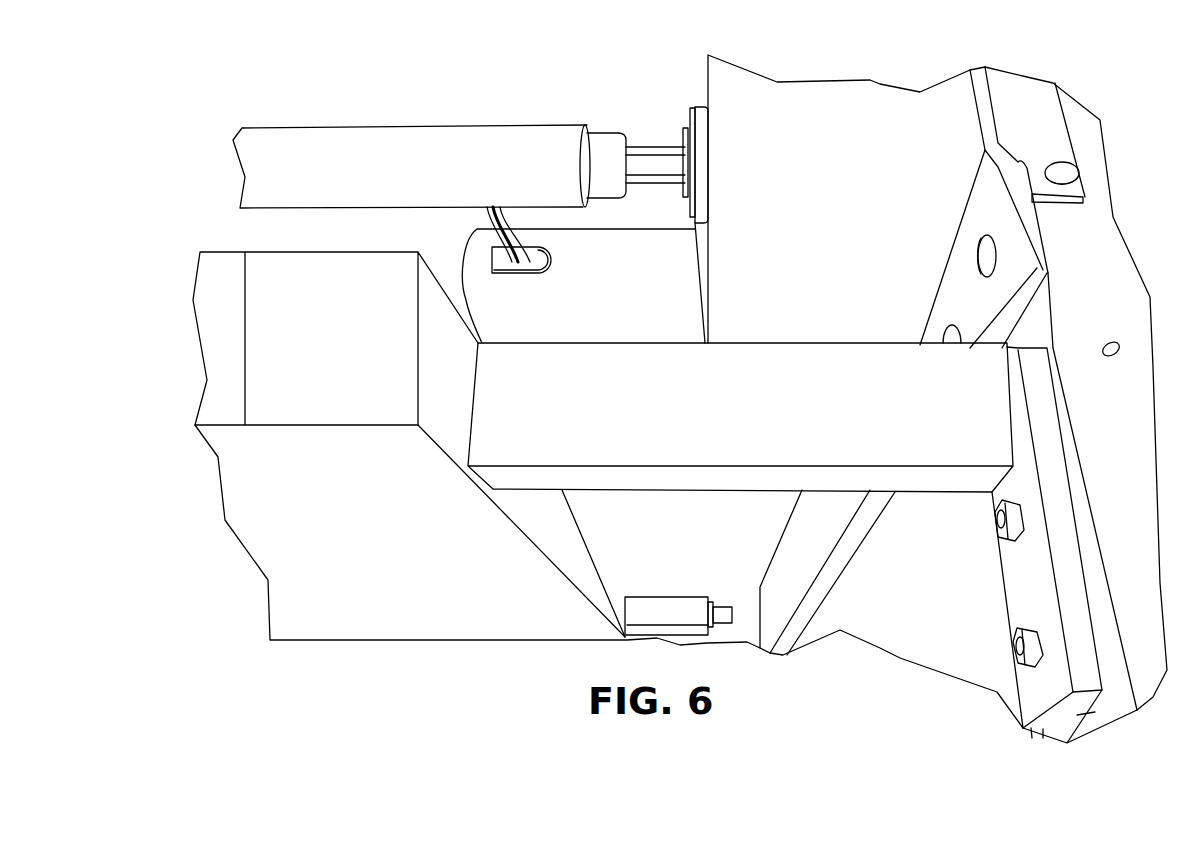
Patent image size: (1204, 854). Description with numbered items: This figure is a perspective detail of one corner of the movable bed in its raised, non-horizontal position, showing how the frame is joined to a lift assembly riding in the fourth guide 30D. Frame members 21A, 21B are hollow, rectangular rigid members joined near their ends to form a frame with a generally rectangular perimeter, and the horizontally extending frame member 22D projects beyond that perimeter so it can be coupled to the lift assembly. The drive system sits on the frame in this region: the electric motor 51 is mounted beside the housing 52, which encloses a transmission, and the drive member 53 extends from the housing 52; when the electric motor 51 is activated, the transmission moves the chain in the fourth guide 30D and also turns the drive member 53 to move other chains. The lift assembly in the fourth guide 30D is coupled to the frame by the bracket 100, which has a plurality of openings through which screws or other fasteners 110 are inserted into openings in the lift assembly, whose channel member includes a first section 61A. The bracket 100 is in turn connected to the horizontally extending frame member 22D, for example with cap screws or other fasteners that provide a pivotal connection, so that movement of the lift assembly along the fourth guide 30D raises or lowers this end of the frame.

The drive member 53 is at (423, 135).
The housing 52 is at (884, 204).
The electric motor 51 is at (648, 277).
The fourth guide 30D is at (1118, 193).
The frame member 21A is at (230, 410).
The frame member 21B is at (533, 522).
The horizontally extending frame member 22D is at (695, 440).
The fasteners 110 is at (1020, 514).
The bracket 100 is at (1013, 593).
The first section 61A is at (1047, 730).